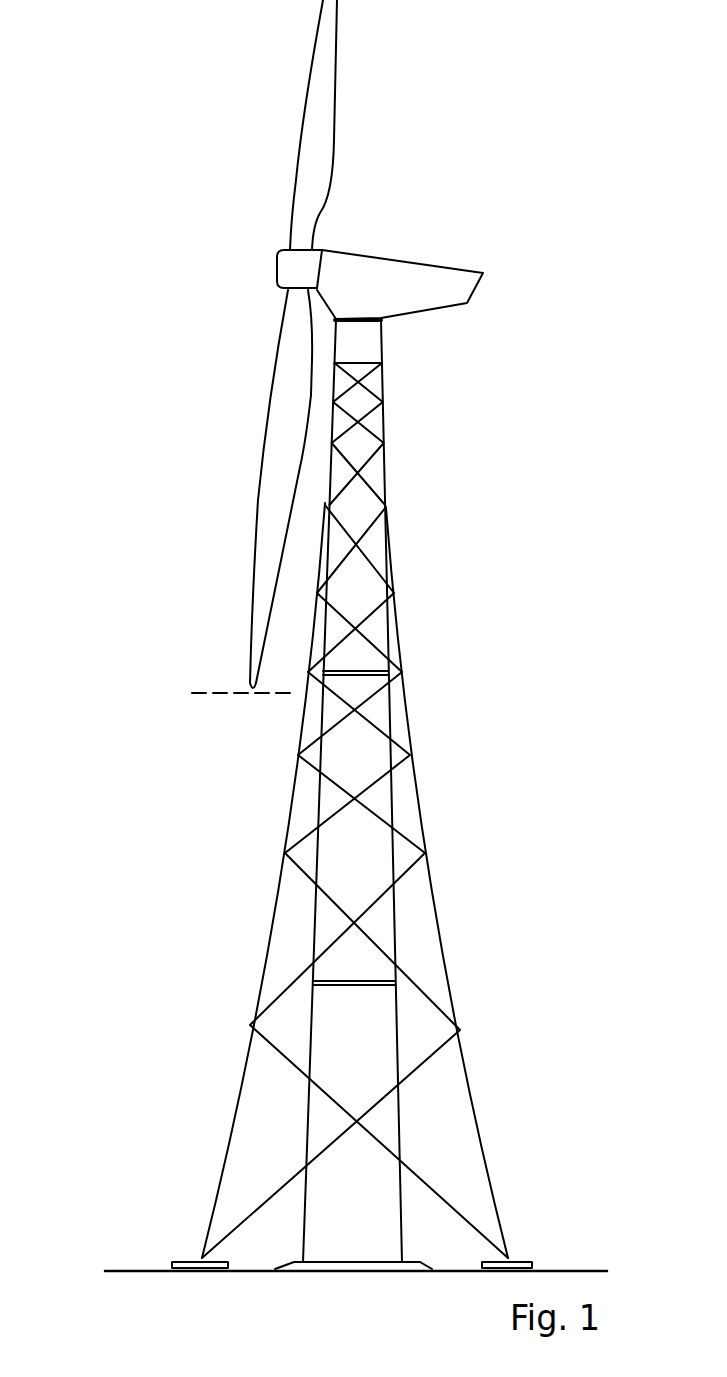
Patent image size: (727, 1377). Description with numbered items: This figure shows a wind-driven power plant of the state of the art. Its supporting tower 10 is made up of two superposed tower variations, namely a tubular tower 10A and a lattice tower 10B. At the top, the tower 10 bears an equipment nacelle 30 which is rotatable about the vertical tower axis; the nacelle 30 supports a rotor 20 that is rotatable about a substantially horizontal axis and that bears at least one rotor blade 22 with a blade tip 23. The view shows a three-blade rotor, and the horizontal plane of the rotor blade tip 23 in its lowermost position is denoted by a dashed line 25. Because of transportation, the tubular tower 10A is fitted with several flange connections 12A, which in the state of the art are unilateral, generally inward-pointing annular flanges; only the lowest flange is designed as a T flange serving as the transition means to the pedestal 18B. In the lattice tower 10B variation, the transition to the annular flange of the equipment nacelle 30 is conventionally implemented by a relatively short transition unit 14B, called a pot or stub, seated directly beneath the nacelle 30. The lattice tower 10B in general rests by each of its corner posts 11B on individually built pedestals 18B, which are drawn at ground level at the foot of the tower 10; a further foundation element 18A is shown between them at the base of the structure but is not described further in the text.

The supporting tower 10 is at (338, 795).
The tubular tower 10A is at (378, 800).
The lattice tower 10B is at (343, 880).
The corner posts 11B is at (240, 1050).
The flange connections 12A is at (377, 679).
The transition unit 14B is at (368, 338).
The central foundation 18A is at (287, 1265).
The pedestal 18B is at (180, 1258).
The rotor 20 is at (243, 371).
The rotor blade 22 is at (236, 489).
The blade tip 23 is at (247, 683).
The dashed line 25 is at (220, 695).
The equipment nacelle 30 is at (424, 272).